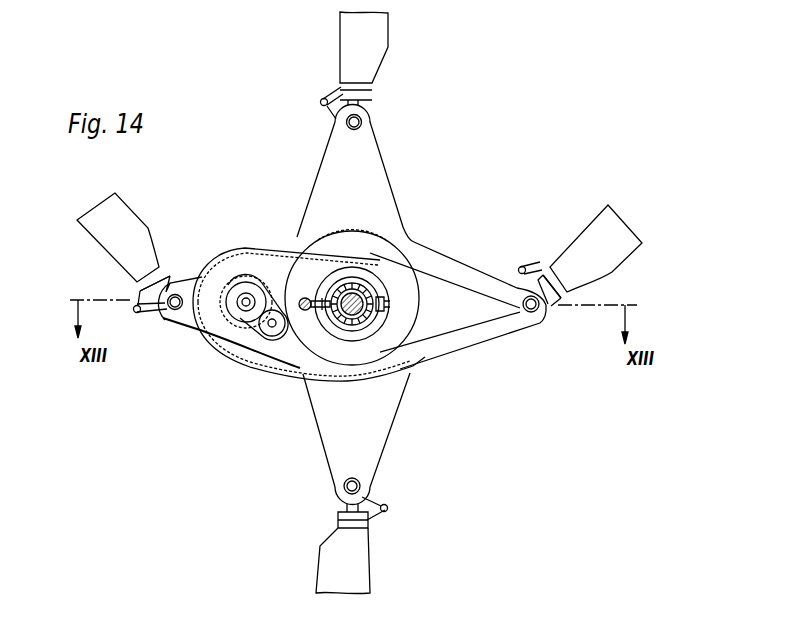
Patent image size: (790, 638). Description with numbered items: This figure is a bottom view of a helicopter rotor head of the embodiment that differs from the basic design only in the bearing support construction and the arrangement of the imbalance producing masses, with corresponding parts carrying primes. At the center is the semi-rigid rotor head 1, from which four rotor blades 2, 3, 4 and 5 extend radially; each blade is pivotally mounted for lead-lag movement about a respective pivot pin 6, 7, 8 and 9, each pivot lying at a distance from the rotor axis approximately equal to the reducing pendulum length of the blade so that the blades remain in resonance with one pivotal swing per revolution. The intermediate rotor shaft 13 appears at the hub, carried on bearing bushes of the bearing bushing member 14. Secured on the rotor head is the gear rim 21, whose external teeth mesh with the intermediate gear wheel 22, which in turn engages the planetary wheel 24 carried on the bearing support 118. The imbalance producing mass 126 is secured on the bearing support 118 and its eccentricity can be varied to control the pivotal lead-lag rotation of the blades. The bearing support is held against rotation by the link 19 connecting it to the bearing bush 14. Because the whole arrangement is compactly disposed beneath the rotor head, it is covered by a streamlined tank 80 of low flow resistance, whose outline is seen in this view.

The semi-rigid rotor head 1 is at (373, 173).
The rotor blade 2 is at (382, 33).
The rotor blade 3 is at (622, 248).
The rotor blade 4 is at (355, 577).
The rotor blade 5 is at (125, 222).
The pivot pin 6 is at (363, 122).
The pivot pin 7 is at (538, 315).
The pivot pin 8 is at (360, 485).
The pivot pin 9 is at (174, 310).
The intermediate rotor shaft 13 is at (343, 287).
The bearing bushing member 14 is at (370, 290).
The link 19 is at (324, 312).
The gear rim 21 is at (325, 242).
The intermediate gear wheel 22 is at (265, 336).
The planetary wheel 24 is at (237, 308).
The streamlined tank 80 is at (442, 323).
The bearing support 118 is at (370, 237).
The imbalance producing mass 126 is at (263, 282).